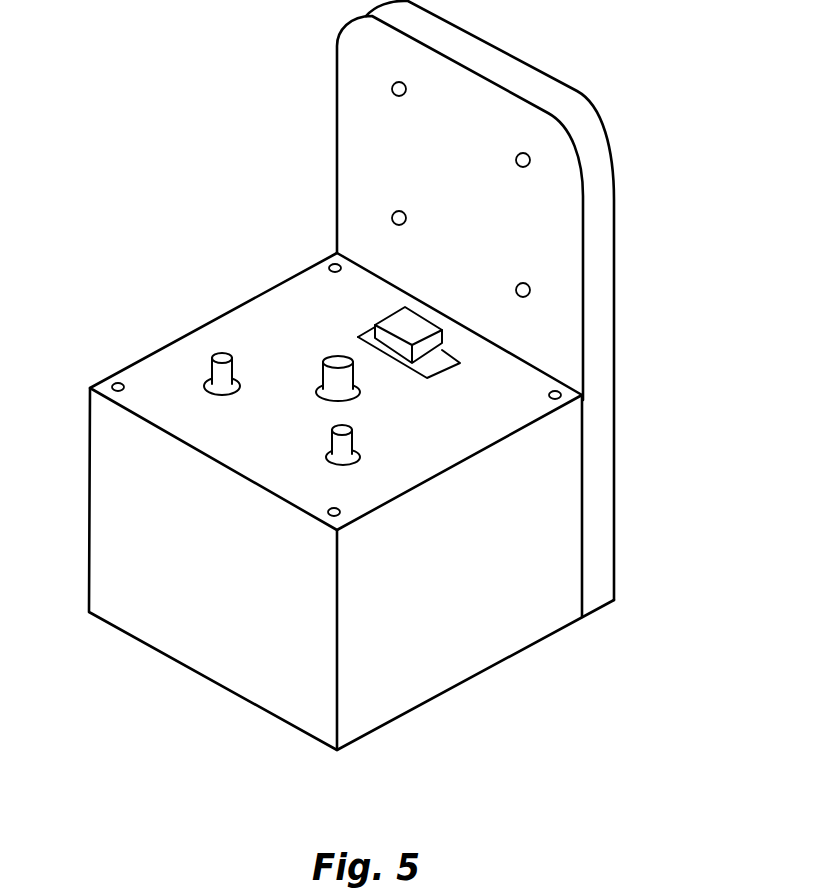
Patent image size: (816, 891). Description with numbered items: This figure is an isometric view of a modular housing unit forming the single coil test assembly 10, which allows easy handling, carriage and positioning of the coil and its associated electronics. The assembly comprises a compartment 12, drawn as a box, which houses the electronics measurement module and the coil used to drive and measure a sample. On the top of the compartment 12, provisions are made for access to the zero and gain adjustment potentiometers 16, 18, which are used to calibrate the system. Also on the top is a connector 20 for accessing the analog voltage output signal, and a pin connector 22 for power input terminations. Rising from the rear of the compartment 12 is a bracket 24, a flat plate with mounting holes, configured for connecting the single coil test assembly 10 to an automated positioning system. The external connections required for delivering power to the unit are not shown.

The single coil test assembly 10 is at (396, 378).
The compartment 12 is at (488, 648).
The zero adjustment potentiometer 16 is at (206, 367).
The gain adjustment potentiometer 18 is at (329, 433).
The connector 20 is at (325, 362).
The pin connector 22 is at (427, 344).
The bracket 24 is at (570, 210).